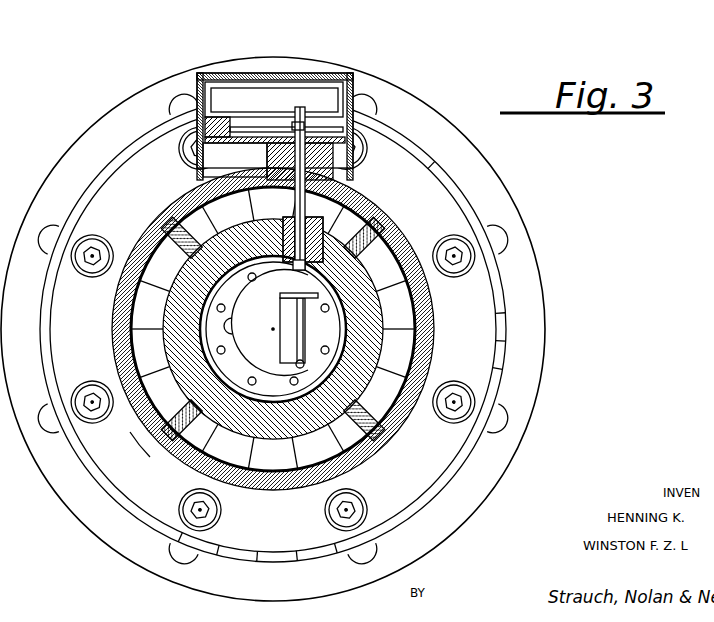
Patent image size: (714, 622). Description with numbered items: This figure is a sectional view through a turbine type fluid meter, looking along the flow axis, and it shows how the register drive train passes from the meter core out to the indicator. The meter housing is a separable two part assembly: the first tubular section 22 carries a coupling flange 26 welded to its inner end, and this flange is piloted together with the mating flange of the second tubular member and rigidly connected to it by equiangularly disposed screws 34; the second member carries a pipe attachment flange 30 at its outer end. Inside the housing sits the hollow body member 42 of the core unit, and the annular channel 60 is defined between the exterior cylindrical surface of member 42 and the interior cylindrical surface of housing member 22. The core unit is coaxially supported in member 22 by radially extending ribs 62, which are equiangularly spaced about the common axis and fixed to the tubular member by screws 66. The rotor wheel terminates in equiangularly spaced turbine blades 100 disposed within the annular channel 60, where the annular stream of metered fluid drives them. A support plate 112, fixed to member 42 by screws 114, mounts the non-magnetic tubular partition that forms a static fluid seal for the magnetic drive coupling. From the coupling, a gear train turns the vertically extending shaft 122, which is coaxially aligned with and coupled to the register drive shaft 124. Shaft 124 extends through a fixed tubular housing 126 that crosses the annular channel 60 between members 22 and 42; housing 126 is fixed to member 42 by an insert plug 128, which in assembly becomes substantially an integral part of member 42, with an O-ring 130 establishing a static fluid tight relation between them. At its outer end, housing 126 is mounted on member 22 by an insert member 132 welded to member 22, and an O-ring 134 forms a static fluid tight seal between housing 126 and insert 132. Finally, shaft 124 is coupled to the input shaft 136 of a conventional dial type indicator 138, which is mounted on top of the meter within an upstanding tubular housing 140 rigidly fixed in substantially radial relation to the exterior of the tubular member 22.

The first tubular section 22 is at (369, 201).
The coupling flange 26 is at (491, 357).
The pipe attachment flange 30 is at (541, 303).
The screws 34 is at (444, 412).
The hollow body member 42 is at (273, 329).
The annular channel 60 is at (428, 303).
The radially extending ribs 62 is at (382, 217).
The screws 66 is at (158, 444).
The turbine blades 100 is at (439, 349).
The support plate 112 is at (211, 292).
The screws 114 is at (249, 327).
The vertically extending shaft 122 is at (304, 326).
The register drive shaft 124 is at (305, 206).
The fixed tubular housing 126 is at (292, 197).
The insert plug 128 is at (323, 231).
The O-ring 130 is at (284, 238).
The insert member 132 is at (262, 157).
The O-ring 134 is at (311, 170).
The input shaft 136 is at (299, 111).
The dial type indicator 138 is at (318, 82).
The upstanding tubular housing 140 is at (357, 100).